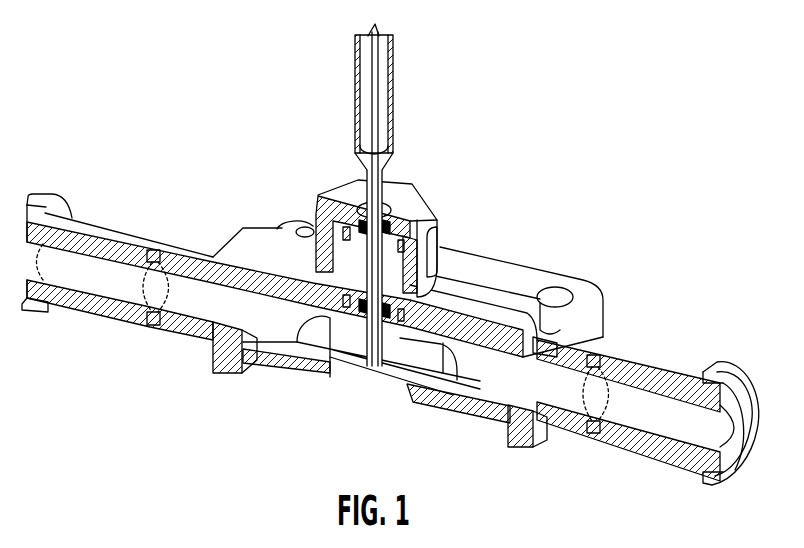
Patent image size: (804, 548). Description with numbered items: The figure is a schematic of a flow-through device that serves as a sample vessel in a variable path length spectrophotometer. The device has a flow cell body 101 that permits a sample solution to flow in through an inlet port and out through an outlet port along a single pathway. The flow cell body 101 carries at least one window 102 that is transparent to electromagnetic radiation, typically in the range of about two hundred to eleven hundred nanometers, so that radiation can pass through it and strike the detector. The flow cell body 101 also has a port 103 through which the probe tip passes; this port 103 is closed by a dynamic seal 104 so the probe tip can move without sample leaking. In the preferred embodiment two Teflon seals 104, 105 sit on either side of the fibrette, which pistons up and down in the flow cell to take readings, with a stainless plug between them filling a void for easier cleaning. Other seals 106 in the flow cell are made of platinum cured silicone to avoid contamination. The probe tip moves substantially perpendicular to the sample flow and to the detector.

The flow cell body 101 is at (648, 472).
The window 102 is at (386, 392).
The port 103 is at (355, 332).
The dynamic seal 104 is at (357, 327).
The teflon seal 105 is at (363, 225).
The seals 106 is at (150, 305).